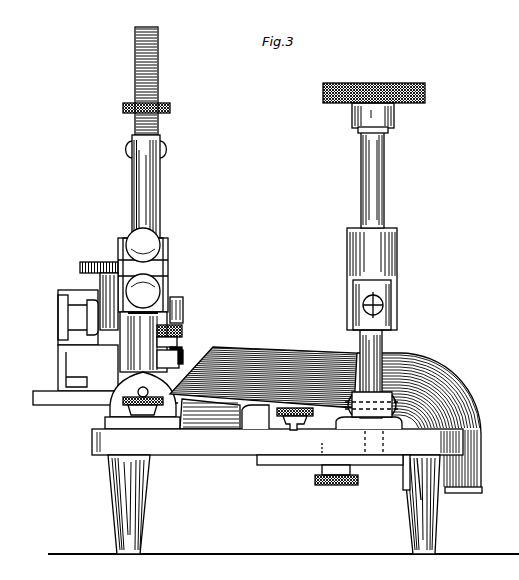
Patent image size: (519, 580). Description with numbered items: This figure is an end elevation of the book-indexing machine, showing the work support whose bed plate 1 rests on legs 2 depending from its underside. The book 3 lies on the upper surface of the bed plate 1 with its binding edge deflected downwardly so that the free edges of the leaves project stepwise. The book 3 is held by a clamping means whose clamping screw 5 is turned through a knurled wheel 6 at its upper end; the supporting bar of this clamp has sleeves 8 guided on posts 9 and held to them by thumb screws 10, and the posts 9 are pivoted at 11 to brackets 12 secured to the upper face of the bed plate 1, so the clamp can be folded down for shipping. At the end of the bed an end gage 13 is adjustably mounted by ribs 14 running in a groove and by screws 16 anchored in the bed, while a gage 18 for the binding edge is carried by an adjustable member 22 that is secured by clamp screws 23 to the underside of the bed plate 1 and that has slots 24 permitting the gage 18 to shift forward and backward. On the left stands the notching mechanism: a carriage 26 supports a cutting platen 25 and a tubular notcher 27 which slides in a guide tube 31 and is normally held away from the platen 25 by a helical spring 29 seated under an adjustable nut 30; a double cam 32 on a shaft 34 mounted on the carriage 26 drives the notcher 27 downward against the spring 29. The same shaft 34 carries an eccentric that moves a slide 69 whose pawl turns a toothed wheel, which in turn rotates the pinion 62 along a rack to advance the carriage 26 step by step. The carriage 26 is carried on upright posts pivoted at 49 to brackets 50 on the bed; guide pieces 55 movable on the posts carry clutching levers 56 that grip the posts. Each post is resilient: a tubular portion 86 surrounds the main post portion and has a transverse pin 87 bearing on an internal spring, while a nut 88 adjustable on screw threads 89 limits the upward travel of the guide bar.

The bed plate 1 is at (222, 450).
The legs 2 is at (141, 493).
The book 3 is at (478, 405).
The clamping screw 5 is at (388, 130).
The knurled wheel 6 is at (425, 93).
The sleeves 8 is at (397, 312).
The posts 9 is at (384, 200).
The thumb screws 10 is at (375, 338).
The pivot 11 is at (369, 436).
The brackets 12 is at (395, 432).
The block 13 is at (257, 431).
The ribs 14 is at (292, 431).
The screws 16 is at (300, 431).
The gage 18 is at (457, 493).
The adjustable member 22 is at (372, 465).
The clamp screws 23 is at (342, 485).
The slots 24 is at (332, 444).
The cutting platen 25 is at (42, 405).
The carriage 26 is at (122, 373).
The notcher 27 is at (182, 362).
The helical spring 29 is at (180, 343).
The adjustable nut 30 is at (182, 330).
The guide tube 31 is at (180, 350).
The double cam 32 is at (180, 300).
The shaft 34 is at (58, 315).
The pivot 49 is at (118, 400).
The brackets 50 is at (145, 429).
The guide pieces 55 is at (118, 250).
The clutching levers 56 is at (150, 240).
The pinion 62 is at (88, 262).
The slide 69 is at (60, 336).
The tubular portion 86 is at (138, 172).
The transverse pin 87 is at (165, 150).
The nut 88 is at (128, 106).
The screw threads 89 is at (160, 86).